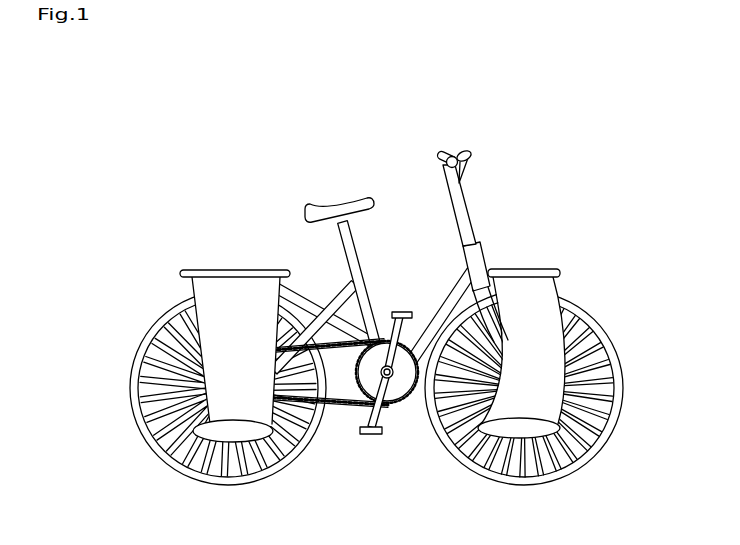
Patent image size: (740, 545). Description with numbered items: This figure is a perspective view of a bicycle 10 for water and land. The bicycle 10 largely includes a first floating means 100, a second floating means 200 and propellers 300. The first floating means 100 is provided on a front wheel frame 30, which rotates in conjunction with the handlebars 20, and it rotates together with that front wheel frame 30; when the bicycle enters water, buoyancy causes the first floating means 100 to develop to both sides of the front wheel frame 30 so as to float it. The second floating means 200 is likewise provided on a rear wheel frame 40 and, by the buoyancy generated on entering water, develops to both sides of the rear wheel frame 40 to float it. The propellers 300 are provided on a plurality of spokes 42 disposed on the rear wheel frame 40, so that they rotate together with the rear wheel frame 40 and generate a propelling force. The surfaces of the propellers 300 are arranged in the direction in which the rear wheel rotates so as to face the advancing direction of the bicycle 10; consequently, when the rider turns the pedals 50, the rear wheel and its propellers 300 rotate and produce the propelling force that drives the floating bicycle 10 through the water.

The bicycle for water and land 10 is at (322, 126).
The handlebars 20 is at (457, 148).
The front wheel frame 30 is at (592, 303).
The rear wheel frame 40 is at (204, 381).
The spokes 42 is at (157, 404).
The pedals 50 is at (373, 440).
The first floating means 100 is at (523, 258).
The second floating means 200 is at (227, 353).
The propellers 300 is at (231, 453).